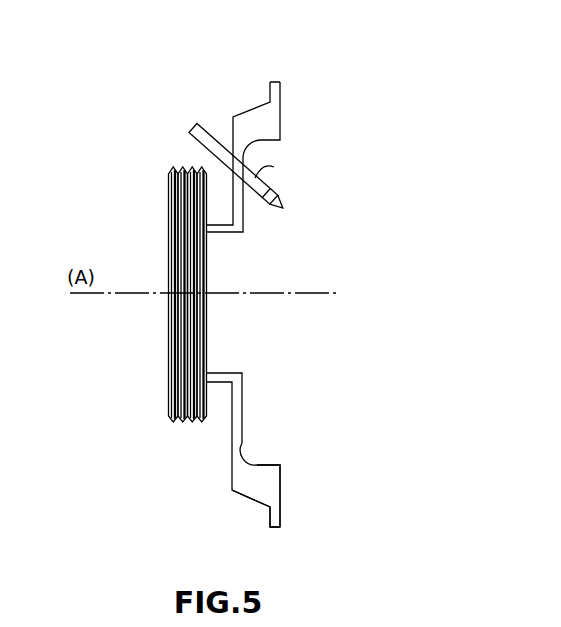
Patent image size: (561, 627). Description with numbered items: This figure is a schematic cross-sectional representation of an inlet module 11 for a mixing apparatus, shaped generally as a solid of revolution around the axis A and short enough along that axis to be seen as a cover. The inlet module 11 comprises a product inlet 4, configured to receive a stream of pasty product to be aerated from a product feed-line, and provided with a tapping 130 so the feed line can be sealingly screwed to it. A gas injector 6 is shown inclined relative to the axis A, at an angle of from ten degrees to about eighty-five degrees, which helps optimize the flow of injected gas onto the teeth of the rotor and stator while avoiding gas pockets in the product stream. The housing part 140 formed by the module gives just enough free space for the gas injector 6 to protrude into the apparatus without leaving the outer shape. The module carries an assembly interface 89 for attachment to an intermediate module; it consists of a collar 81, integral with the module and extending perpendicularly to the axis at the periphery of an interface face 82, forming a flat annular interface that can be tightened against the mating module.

The inlet module 11 is at (128, 125).
The product inlet 4 is at (168, 187).
The gas injector 6 is at (195, 124).
The collar 81 is at (270, 87).
The interface face 82 is at (282, 106).
The assembly interface 89 is at (288, 90).
The tapping 130 is at (187, 424).
The housing part 140 is at (259, 480).